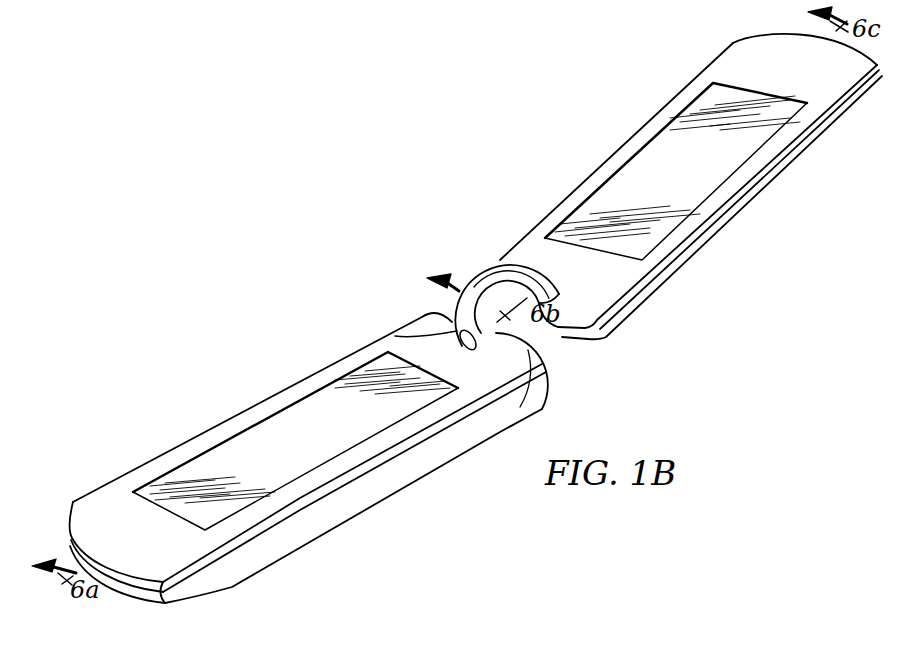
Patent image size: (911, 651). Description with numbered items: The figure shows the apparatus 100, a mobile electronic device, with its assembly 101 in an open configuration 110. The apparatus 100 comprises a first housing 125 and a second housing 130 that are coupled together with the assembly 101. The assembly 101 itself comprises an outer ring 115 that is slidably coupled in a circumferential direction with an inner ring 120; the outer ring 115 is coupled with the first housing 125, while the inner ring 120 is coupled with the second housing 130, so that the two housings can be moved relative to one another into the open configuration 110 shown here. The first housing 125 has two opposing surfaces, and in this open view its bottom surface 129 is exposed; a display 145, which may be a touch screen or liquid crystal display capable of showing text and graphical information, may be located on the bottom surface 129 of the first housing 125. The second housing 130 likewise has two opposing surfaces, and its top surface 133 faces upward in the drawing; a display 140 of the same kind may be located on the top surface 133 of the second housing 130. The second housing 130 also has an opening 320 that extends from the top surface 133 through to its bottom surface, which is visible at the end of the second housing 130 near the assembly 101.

The apparatus 100 is at (388, 191).
The assembly 101 is at (456, 254).
The open configuration 110 is at (384, 270).
The outer ring 115 is at (487, 270).
The inner ring 120 is at (518, 375).
The first housing 125 is at (711, 265).
The bottom surface 129 is at (737, 65).
The second housing 130 is at (443, 481).
The top surface 133 is at (113, 497).
The display 140 is at (285, 418).
The display 145 is at (645, 158).
The opening 320 is at (400, 330).